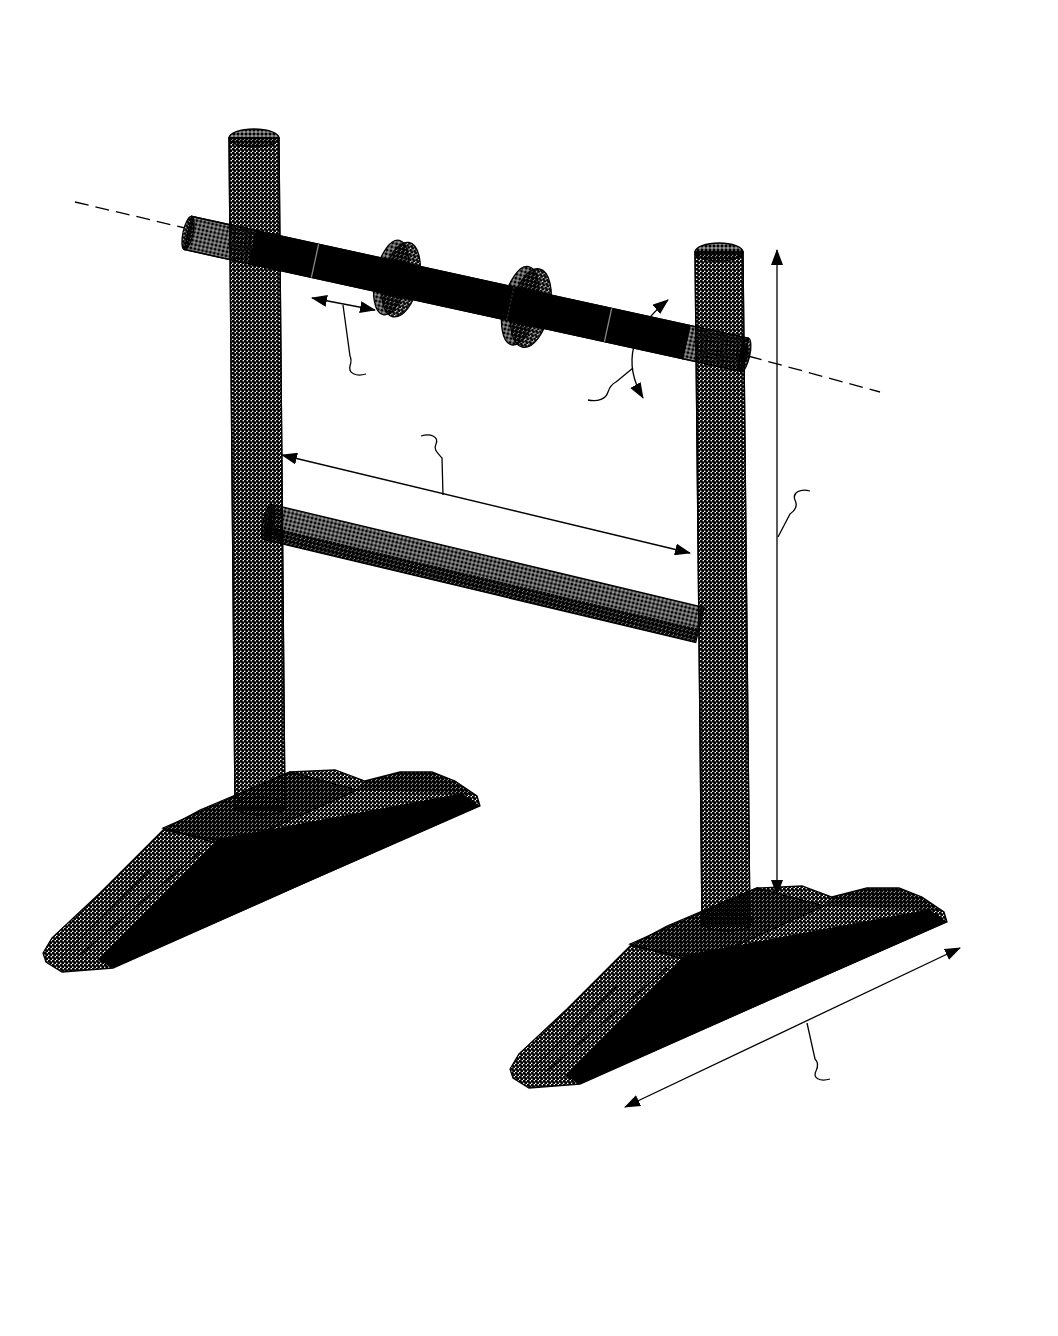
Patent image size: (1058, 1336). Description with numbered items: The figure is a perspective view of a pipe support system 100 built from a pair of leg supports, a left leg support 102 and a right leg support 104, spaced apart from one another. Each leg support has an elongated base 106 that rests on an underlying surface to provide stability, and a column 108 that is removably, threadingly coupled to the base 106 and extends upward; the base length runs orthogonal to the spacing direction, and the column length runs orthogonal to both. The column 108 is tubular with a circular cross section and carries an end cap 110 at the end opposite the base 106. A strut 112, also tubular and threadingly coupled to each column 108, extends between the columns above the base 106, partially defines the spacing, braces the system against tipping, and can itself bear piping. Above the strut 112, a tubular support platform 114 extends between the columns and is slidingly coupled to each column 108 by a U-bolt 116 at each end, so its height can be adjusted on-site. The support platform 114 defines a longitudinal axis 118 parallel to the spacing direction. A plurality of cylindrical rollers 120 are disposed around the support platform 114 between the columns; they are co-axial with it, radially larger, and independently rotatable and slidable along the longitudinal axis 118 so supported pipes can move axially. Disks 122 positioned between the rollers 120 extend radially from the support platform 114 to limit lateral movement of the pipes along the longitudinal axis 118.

The pipe support system 100 is at (786, 82).
The left leg support 102 is at (220, 115).
The right leg support 104 is at (762, 236).
The elongated base 106 is at (177, 952).
The column 108 is at (233, 377).
The end cap 110 is at (263, 129).
The strut 112 is at (470, 588).
The support platform 114 is at (192, 218).
The U-bolt 116 is at (283, 223).
The longitudinal axis 118 is at (143, 218).
The rollers 120 is at (357, 250).
The disks 122 is at (545, 278).